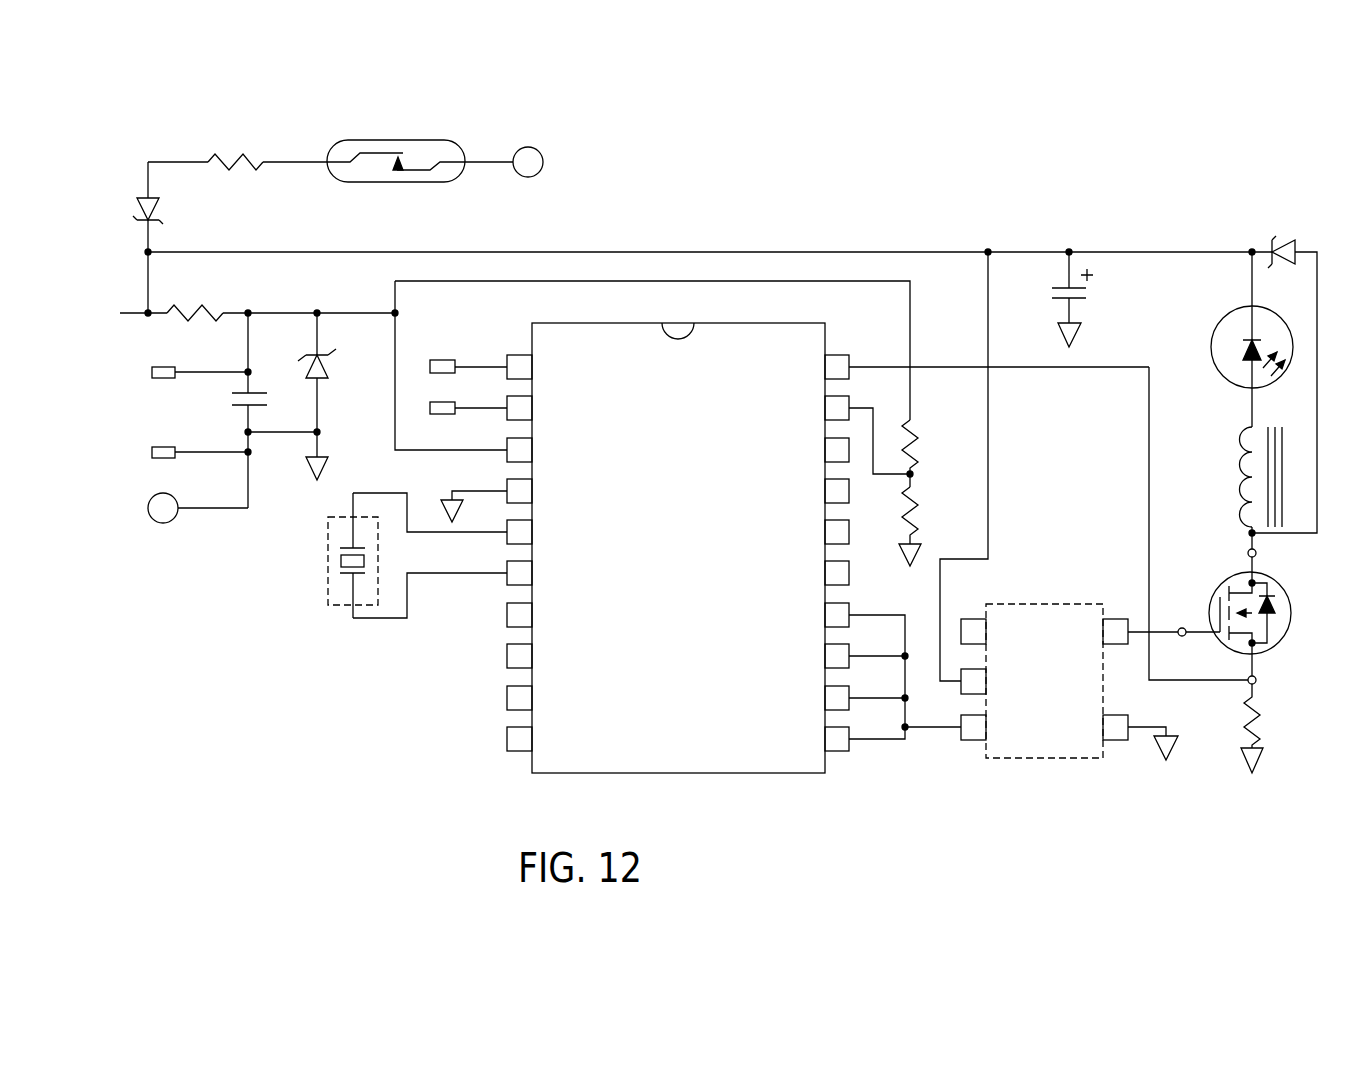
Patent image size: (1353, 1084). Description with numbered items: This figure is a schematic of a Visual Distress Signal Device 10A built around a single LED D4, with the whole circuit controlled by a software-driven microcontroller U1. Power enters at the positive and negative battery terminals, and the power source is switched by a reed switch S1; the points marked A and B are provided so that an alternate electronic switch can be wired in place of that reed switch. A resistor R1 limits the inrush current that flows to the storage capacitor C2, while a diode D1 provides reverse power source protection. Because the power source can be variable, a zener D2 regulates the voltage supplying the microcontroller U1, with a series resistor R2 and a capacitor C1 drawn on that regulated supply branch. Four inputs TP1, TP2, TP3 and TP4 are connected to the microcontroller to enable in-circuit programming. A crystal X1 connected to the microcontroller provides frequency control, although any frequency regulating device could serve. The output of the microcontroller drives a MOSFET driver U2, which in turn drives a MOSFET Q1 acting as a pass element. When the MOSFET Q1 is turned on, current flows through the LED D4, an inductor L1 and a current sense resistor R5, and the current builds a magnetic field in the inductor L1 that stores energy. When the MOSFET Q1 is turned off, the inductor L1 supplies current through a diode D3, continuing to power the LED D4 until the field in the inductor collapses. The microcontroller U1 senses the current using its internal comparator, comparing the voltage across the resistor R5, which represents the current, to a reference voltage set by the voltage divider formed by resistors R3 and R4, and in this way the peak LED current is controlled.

The Visual Distress Signal Device 10A is at (863, 233).
The resistor R1 is at (235, 174).
The reed switch S1 is at (396, 176).
The diode D1 is at (166, 211).
The zener D2 is at (329, 385).
The diode D3 is at (1280, 238).
The LED D4 is at (1244, 336).
The resistor R2 is at (195, 301).
The resistor R3 is at (930, 453).
The resistor R4 is at (930, 515).
The current sense resistor R5 is at (1234, 716).
The capacitor C1 is at (233, 410).
The storage capacitor C2 is at (1091, 287).
The test point input TP1 is at (466, 351).
The test point input TP2 is at (466, 422).
The test point input TP3 is at (197, 357).
The test point input TP4 is at (197, 439).
The crystal X1 is at (369, 555).
The microcontroller U1 is at (678, 534).
The MOSFET Driver U2 is at (1044, 663).
The inductor L1 is at (1246, 477).
The MOSFET Q1 is at (1243, 612).